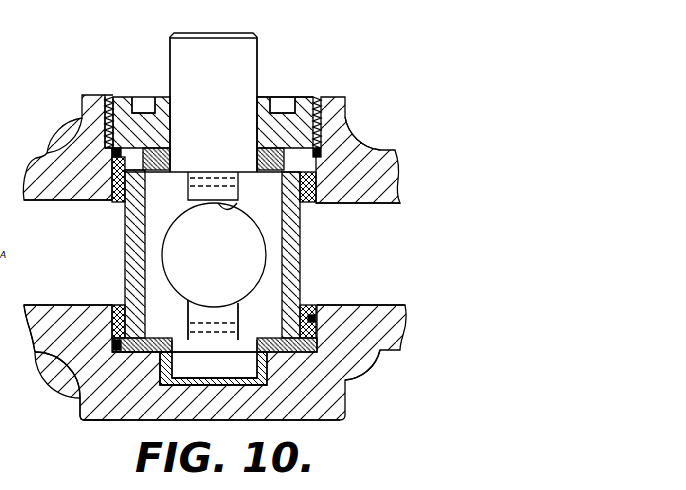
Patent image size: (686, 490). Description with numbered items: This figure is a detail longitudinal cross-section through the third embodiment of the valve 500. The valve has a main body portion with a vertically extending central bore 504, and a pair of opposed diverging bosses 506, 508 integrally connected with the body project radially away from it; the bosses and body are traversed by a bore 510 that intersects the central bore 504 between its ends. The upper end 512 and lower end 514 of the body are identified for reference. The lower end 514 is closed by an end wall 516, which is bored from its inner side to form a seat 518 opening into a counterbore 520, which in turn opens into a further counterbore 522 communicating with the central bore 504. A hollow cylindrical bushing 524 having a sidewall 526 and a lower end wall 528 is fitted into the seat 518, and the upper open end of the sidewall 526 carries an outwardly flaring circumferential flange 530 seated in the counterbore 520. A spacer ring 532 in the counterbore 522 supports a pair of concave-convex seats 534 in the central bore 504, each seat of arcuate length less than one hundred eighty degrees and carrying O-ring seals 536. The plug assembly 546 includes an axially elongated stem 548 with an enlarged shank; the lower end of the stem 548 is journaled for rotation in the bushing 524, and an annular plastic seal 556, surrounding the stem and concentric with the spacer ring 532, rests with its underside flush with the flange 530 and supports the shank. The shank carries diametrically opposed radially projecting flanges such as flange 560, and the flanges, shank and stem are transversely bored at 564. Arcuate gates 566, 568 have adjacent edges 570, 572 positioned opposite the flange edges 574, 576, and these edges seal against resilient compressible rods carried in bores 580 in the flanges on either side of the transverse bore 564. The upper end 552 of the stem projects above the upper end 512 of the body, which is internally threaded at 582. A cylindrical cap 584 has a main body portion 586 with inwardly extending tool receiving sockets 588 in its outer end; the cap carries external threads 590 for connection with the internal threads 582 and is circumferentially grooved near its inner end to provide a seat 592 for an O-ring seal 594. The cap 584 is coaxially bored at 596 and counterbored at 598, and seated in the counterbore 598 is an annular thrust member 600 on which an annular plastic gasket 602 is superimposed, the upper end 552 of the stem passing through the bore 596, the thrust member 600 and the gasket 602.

The valve 500 is at (401, 121).
The central bore 504 is at (329, 308).
The boss 506 is at (40, 357).
The boss 508 is at (400, 352).
The bore 510 is at (88, 305).
The upper end of main body portion 512 is at (339, 95).
The lower end of main body portion 514 is at (326, 421).
The end wall 516 is at (150, 419).
The seat 518 is at (193, 386).
The counterbore 520 is at (112, 392).
The further counterbore 522 is at (82, 396).
The bushing 524 is at (255, 386).
The sidewall 526 is at (173, 363).
The lower end wall 528 is at (172, 386).
The circumferential flange 530 is at (92, 420).
The spacer ring 532 is at (107, 330).
The concave-convex seats 534 is at (68, 362).
The O-ring seals 536 is at (357, 160).
The plug assembly 546 is at (258, 65).
The stem 548 is at (170, 70).
The upper end of stem 552 is at (238, 33).
The annular plastic seal 556 is at (160, 338).
The flange 560 is at (222, 170).
The transverse bore 564 is at (236, 211).
The arcuate gate 566 is at (125, 247).
The arcuate gate 568 is at (300, 247).
The gate edge 570 is at (189, 306).
The gate edge 572 is at (240, 187).
The flange edge 574 is at (187, 197).
The flange edge 576 is at (239, 307).
The bores 580 is at (216, 332).
The internal threads 582 is at (318, 100).
The cylindrical cap 584 is at (119, 98).
The main body portion of cap 586 is at (268, 97).
The tool receiving sockets 588 is at (150, 99).
The outer thread 590 is at (106, 114).
The seat 592 is at (107, 136).
The O-ring seal 594 is at (112, 152).
The bore 596 is at (171, 112).
The counterbore 598 is at (119, 203).
The annular thrust member 600 is at (168, 152).
The annular plastic gasket 602 is at (144, 178).